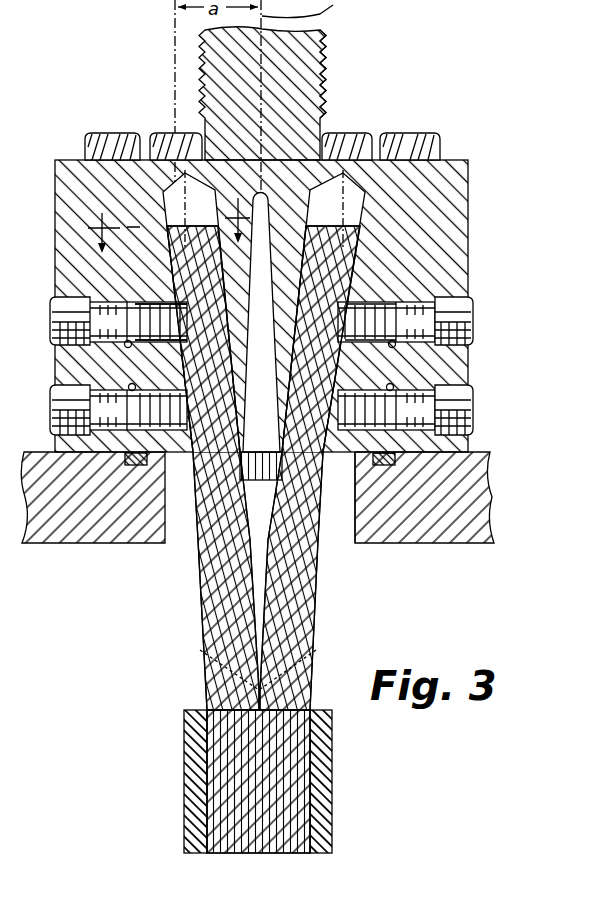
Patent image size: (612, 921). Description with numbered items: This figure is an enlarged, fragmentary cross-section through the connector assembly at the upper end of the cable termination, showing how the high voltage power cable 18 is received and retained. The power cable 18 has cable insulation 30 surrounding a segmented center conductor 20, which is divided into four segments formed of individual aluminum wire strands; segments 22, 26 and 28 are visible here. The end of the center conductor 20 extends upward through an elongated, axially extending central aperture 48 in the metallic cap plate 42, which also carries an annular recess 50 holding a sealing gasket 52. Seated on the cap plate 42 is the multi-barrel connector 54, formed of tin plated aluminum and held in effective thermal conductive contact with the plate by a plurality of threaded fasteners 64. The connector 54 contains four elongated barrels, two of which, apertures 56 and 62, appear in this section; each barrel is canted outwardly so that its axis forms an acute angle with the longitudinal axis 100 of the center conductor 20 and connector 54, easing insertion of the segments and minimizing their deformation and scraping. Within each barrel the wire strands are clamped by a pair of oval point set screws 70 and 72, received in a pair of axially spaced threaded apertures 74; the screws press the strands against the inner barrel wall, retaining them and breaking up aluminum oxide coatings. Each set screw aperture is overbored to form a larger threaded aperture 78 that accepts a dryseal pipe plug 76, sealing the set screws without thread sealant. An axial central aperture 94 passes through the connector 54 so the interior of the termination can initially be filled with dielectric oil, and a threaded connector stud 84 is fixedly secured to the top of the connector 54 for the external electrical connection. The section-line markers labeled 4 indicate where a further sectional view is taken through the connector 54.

The longitudinal axis 100 is at (290, 16).
The threaded connector stud 84 is at (320, 78).
The barrel or aperture 62 is at (348, 133).
The barrel or aperture 56 is at (168, 133).
The threaded fasteners 64 is at (145, 133).
The multi-barrel connector 54 is at (474, 174).
The axial central aperture 94 is at (262, 201).
The threaded aperture 78 is at (50, 300).
The pipe plugs 76 is at (50, 322).
The set screw 72 is at (160, 305).
The threaded apertures 74 is at (128, 348).
The set screw 70 is at (130, 460).
The sealing gasket 52 is at (131, 465).
The cap plate 42 is at (461, 539).
The central aperture 48 is at (346, 530).
The annular recess 50 is at (378, 465).
The center conductor segment 26 is at (257, 581).
The center conductor segment 28 is at (306, 637).
The center conductor segment 22 is at (212, 642).
The center conductor 20 is at (200, 691).
The cable insulation 30 is at (334, 774).
The power cable 18 is at (261, 769).
The section line 4- 4 is at (168, 211).